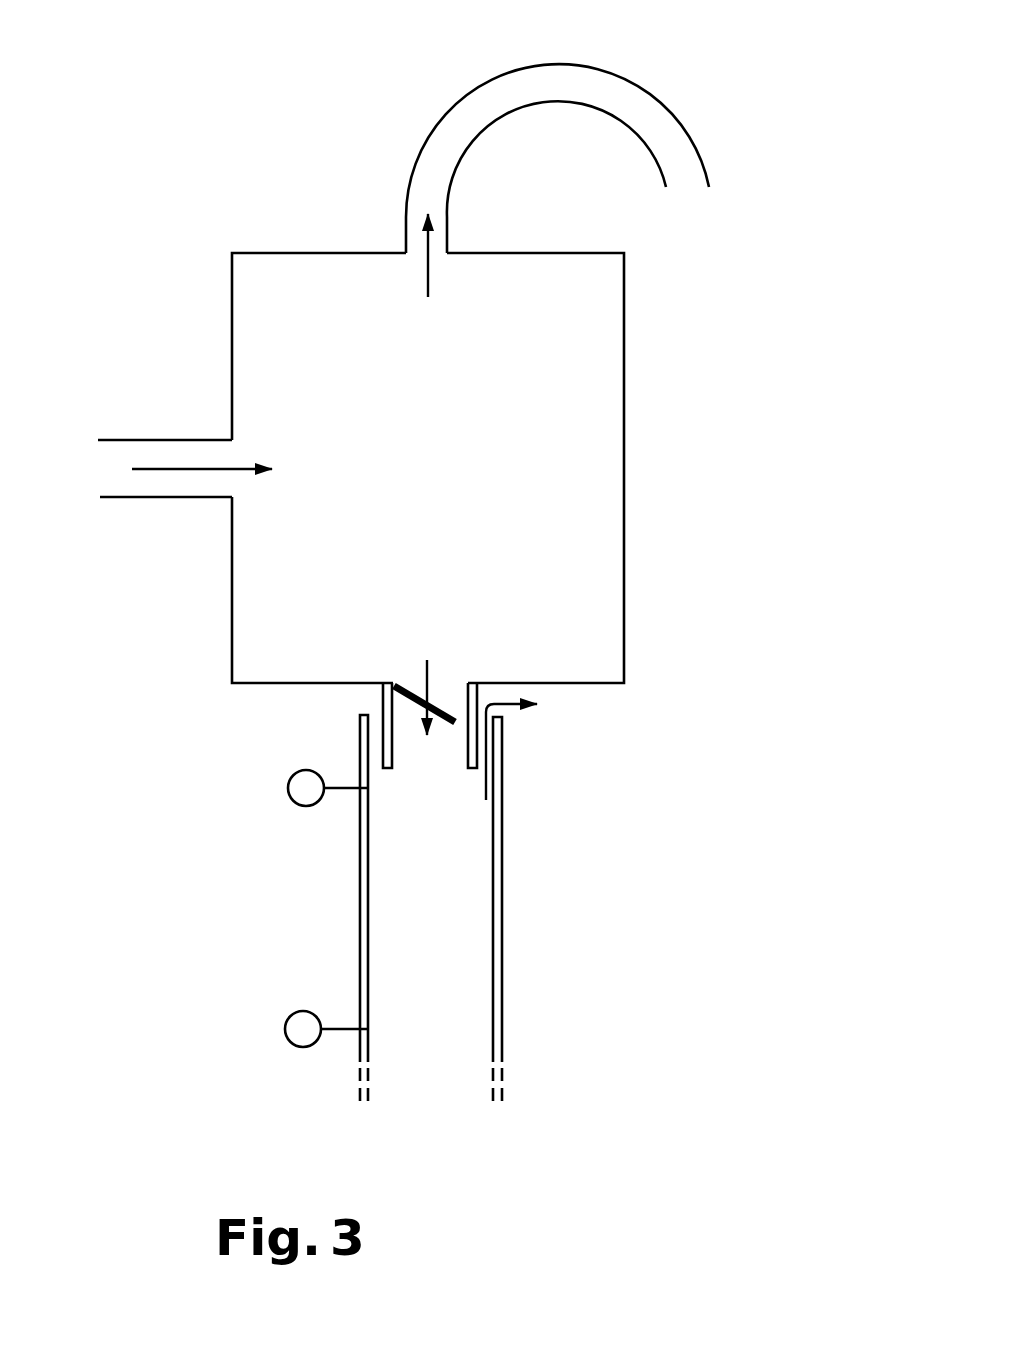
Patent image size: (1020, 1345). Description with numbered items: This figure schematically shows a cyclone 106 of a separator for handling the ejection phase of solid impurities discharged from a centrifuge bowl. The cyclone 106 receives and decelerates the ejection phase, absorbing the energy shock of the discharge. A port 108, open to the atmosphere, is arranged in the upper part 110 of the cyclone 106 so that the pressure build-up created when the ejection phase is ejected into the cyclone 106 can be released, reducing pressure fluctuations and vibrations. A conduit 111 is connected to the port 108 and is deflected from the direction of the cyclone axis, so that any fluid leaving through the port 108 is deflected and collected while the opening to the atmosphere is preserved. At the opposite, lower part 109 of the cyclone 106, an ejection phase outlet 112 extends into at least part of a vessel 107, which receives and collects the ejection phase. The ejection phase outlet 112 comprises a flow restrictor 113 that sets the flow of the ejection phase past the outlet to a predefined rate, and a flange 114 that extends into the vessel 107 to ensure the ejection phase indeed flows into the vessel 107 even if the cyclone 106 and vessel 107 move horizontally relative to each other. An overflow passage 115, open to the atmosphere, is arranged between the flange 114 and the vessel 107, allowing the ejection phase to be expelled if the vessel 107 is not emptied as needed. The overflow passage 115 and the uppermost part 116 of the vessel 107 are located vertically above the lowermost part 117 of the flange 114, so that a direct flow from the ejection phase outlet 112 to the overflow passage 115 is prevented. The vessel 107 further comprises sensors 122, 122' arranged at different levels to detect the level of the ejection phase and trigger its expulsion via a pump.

The cyclone 106 is at (624, 472).
The vessel 107 is at (502, 980).
The port 108 is at (441, 256).
The lower part of the cyclone 109 is at (655, 643).
The upper part of the cyclone 110 is at (660, 298).
The conduit 111 is at (627, 80).
The ejection phase outlet 112 is at (452, 678).
The flow restrictor 113 is at (408, 686).
The flange 114 is at (383, 703).
The overflow passage 115 is at (499, 726).
The uppermost part of the vessel 116 is at (496, 718).
The lowermost part of the flange 117 is at (393, 767).
The sensor 122 is at (278, 805).
The sensor 122' is at (276, 1049).